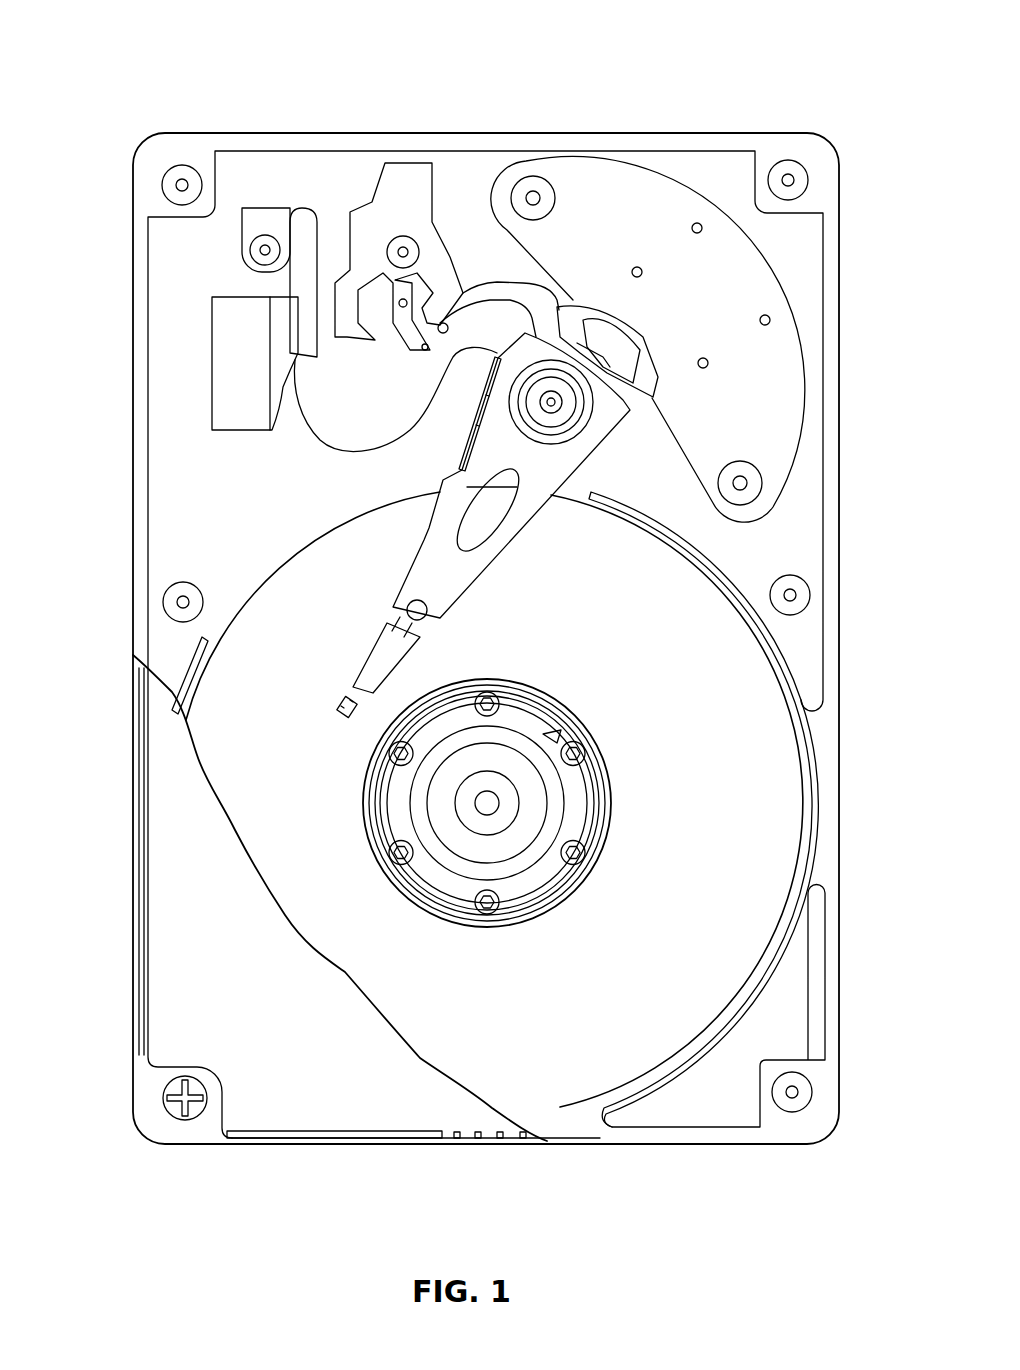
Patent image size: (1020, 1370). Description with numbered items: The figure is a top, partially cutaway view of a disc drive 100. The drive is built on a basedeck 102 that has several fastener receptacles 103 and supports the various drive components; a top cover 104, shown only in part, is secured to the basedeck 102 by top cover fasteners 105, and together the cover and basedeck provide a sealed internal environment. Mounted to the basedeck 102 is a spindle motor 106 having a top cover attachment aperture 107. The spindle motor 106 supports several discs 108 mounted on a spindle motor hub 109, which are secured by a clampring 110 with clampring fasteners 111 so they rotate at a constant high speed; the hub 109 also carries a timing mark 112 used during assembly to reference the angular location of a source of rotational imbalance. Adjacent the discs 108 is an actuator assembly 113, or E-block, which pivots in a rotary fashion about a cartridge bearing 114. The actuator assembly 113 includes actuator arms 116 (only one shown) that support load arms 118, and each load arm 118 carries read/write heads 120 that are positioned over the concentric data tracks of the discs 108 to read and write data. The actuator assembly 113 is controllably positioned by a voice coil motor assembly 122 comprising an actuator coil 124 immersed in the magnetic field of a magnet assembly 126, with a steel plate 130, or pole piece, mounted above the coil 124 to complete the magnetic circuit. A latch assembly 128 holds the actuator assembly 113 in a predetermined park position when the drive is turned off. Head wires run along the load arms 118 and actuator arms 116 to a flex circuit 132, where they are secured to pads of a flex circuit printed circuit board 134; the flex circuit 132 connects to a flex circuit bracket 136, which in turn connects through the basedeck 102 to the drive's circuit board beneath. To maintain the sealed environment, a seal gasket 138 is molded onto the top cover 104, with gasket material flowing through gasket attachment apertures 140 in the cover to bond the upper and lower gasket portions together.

The disc drive 100 is at (251, 116).
The basedeck 102 is at (230, 500).
The fastener receptacles 103 is at (182, 185).
The top cover 104 is at (203, 1010).
The top cover fasteners 105 is at (175, 1108).
The spindle motor 106 is at (498, 840).
The top cover attachment aperture 107 is at (487, 803).
The discs 108 is at (730, 893).
The spindle motor hub 109 is at (577, 798).
The clampring 110 is at (368, 803).
The clampring fasteners 111 is at (485, 703).
The timing mark 112 is at (562, 744).
The actuator assembly 113 is at (540, 452).
The cartridge bearing 114 is at (551, 410).
The actuator arms 116 is at (425, 587).
The load arms 118 is at (373, 670).
The read/write heads 120 is at (347, 703).
The voice coil motor assembly 122 is at (790, 265).
The actuator coil 124 is at (573, 303).
The magnet assembly 126 is at (615, 200).
The latch assembly 128 is at (405, 185).
The steel plate 130 is at (680, 185).
The flex circuit 132 is at (345, 460).
The flex circuit printed circuit board 134 is at (462, 440).
The flex circuit bracket 136 is at (212, 360).
The seal gasket 138 is at (148, 740).
The gasket attachment apertures 140 is at (478, 1140).